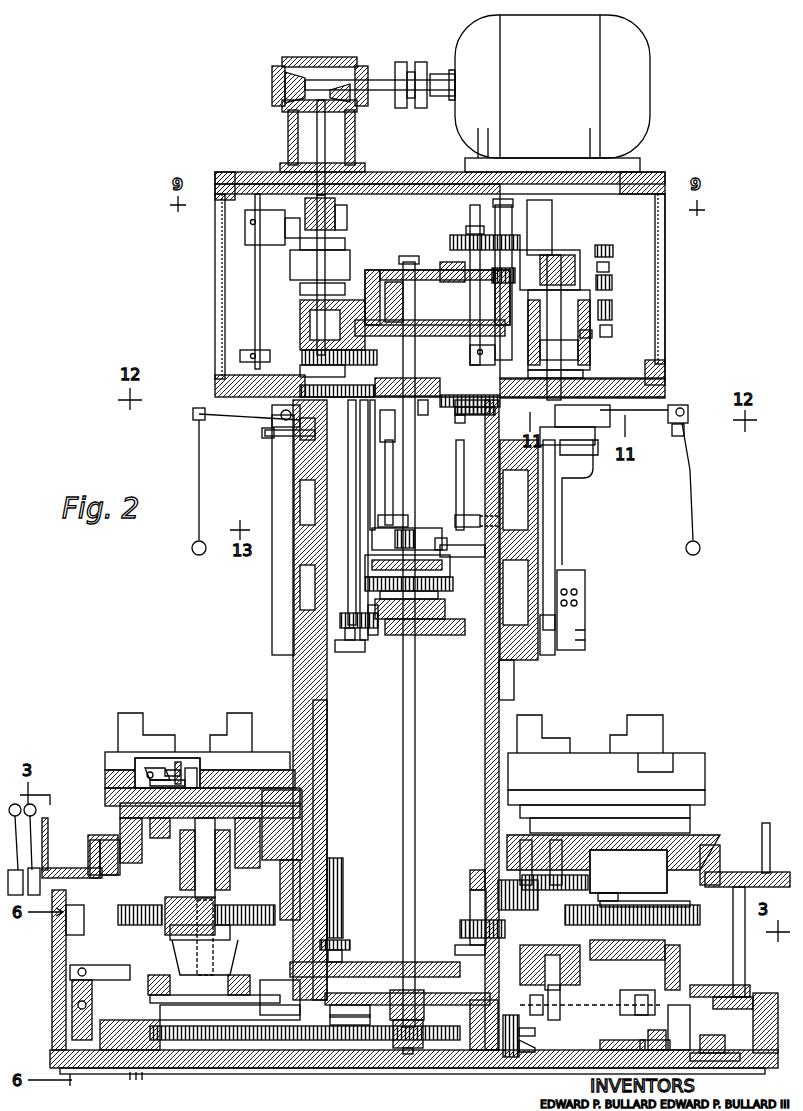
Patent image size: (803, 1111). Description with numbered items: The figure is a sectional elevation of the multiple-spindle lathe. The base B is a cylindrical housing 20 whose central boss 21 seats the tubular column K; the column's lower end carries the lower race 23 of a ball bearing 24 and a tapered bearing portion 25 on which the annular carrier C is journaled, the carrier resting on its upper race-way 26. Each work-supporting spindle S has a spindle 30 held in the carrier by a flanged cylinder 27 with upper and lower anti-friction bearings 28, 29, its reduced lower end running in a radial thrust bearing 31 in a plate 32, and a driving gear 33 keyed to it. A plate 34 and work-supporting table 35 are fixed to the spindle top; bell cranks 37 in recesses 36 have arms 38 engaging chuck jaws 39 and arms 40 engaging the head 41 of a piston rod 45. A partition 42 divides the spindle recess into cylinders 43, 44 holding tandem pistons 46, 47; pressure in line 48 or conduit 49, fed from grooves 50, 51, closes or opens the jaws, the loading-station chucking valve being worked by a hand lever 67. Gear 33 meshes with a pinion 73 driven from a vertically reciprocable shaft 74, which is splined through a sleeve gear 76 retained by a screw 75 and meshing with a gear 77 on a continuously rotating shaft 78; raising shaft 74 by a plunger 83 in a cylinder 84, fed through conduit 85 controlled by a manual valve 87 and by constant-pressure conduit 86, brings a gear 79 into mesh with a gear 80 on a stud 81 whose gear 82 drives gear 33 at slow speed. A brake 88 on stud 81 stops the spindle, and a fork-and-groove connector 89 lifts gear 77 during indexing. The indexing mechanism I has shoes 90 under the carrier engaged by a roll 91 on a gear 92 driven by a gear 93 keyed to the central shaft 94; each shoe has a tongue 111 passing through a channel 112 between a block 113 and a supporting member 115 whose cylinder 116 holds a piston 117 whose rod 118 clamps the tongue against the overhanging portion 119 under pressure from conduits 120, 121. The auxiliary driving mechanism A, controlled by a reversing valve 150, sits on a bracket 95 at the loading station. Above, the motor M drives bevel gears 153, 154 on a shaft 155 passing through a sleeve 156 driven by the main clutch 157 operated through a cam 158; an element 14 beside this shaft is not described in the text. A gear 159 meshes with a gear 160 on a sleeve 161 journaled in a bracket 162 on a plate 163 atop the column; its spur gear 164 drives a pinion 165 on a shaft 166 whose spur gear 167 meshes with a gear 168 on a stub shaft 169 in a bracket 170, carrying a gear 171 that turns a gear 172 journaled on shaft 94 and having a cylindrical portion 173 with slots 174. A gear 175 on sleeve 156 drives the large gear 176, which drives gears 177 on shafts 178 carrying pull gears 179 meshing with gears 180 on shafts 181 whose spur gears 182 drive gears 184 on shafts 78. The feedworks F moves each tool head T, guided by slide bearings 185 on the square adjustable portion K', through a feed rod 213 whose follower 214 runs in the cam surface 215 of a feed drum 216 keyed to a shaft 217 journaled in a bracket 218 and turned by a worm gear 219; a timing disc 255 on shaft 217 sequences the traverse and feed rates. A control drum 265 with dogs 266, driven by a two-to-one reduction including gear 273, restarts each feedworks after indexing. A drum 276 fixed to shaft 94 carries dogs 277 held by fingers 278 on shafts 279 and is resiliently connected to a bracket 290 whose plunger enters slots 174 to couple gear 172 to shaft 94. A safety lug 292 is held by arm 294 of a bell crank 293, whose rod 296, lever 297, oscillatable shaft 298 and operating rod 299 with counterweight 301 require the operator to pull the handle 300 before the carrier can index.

The bevel gear 153 is at (305, 72).
The bevel gear 154 is at (338, 113).
The vertically-disposed shaft 155 is at (325, 150).
The motor M is at (660, 148).
The sleeve 156 is at (340, 204).
The main clutch 157 is at (300, 264).
The cam 158 is at (270, 281).
The gear 175 is at (302, 340).
The gear 14 is at (339, 350).
The gear 159 is at (340, 375).
The sleeve 161 is at (335, 380).
The gear 160 is at (372, 340).
The relatively large gear 176 is at (408, 326).
The control drum 265 is at (362, 275).
The gear 177 is at (433, 308).
The dog 266 is at (442, 272).
The shaft 94 is at (405, 480).
The gear 179 is at (455, 238).
The vertically-disposed shaft 178 is at (475, 243).
The gear 180 is at (498, 222).
The shaft 181 is at (548, 210).
The bracket 218 is at (556, 256).
The cam follower 214 is at (559, 330).
The worm gear 219 is at (598, 314).
The shaft 217 is at (590, 336).
The cam surface 215 is at (590, 351).
The feed drum 216 is at (584, 373).
The feedworks F is at (624, 348).
The gear 273 is at (470, 398).
The operating rod 299 is at (246, 481).
The oscillatable shaft 298 is at (271, 424).
The pivotally-mounted lever 297 is at (272, 437).
The reciprocable rod 296 is at (268, 440).
The counter-balancing weight 301 is at (295, 443).
The handle portion 300 is at (201, 542).
The adjustable portion K' is at (265, 700).
The gear 171 is at (360, 592).
The spur gear 164 is at (384, 440).
The pinion 165 is at (366, 452).
The vertically-disposed shaft 166 is at (372, 482).
The bell crank 293 is at (425, 486).
The bracket 162 is at (429, 417).
The gear 184 is at (478, 418).
The plate 163 is at (442, 436).
The shaft 279 is at (458, 462).
The drum 276 is at (446, 545).
The lug 292 is at (438, 538).
The finger 278 is at (480, 520).
The arm 294 is at (407, 540).
The dog 277 is at (436, 548).
The bracket 290 is at (407, 565).
The slots 174 is at (436, 582).
The cylindrical portion 173 is at (432, 594).
The gear 172 is at (430, 602).
The bracket 170 is at (446, 636).
The stub shaft 169 is at (362, 630).
The gear 168 is at (376, 636).
The spur gear 167 is at (343, 652).
The shaft 78 is at (480, 498).
The spur gear 182 is at (519, 550).
The slide bearings 185 is at (556, 530).
The feed rod 213 is at (556, 472).
The timing disc 255 is at (575, 425).
The tool support T is at (600, 650).
The column K is at (537, 682).
The work-supporting spindle S is at (94, 754).
The chuck jaw 39 is at (120, 714).
The work-supporting table 35 is at (107, 778).
The plate 34 is at (107, 798).
The arm 38 is at (158, 766).
The bell crank 37 is at (170, 778).
The recess 36 is at (182, 766).
The arm 40 is at (186, 776).
The head 41 is at (224, 786).
The hand lever 67 is at (37, 810).
The cylindrical portion 44 is at (194, 845).
The piston 47 is at (182, 862).
The partition 42 is at (170, 896).
The cylindrical portion 43 is at (250, 872).
The driving gear 33 is at (288, 912).
The anti-friction bearing 28 is at (298, 842).
The flanged cylinder 27 is at (298, 890).
The anti-friction bearing 29 is at (326, 896).
The tapered bearing portion 25 is at (330, 830).
The groove 50 is at (350, 952).
The groove 51 is at (345, 958).
The piston 46 is at (238, 948).
The spindle 30 is at (240, 962).
The piston rod 45 is at (205, 937).
The conduit 49 is at (161, 979).
The line 48 is at (242, 979).
The upper race-way 26 is at (340, 977).
The roll 91 is at (414, 1000).
The ball bearing 24 is at (326, 993).
The lower race 23 is at (330, 1008).
The anti-friction radial thrust bearing 31 is at (236, 994).
The plate 32 is at (280, 997).
The hand-operated reversing valve 150 is at (65, 926).
The bracket 95 is at (53, 1030).
The auxiliary driving mechanism A is at (70, 977).
The base B is at (110, 1085).
The indexing mechanism I is at (300, 1064).
The plunger 83 is at (452, 1029).
The driving gear 92 is at (365, 1032).
The gear 93 is at (400, 1042).
The boss 21 is at (488, 1040).
The fork and groove connector 89 is at (470, 950).
The shaft 74 is at (470, 878).
The gear 79 is at (470, 898).
The pinion 73 is at (478, 908).
The gear 77 is at (470, 926).
The carrier C is at (718, 842).
The gear 80 is at (592, 877).
The stud 81 is at (552, 842).
The gear 82 is at (575, 904).
The brake mechanism 88 is at (625, 893).
The manually-operated valve 87 is at (745, 910).
The sleeve gear 76 is at (568, 964).
The screw 75 is at (589, 1002).
The overhanging portion 119 is at (665, 982).
The block 113 is at (715, 984).
The tongue 111 is at (660, 1002).
The indexing shoe 90 is at (610, 1017).
The piston rod 118 is at (692, 1024).
The channel 112 is at (748, 1006).
The housing 20 is at (755, 1032).
The supporting member 115 is at (726, 1045).
The conduit 121 is at (622, 1046).
The conduit 120 is at (648, 1046).
The piston 117 is at (670, 1068).
The cylinder 116 is at (712, 1068).
The cylinder 84 is at (520, 1022).
The conduit 86 is at (536, 1034).
The conduit 85 is at (536, 1048).